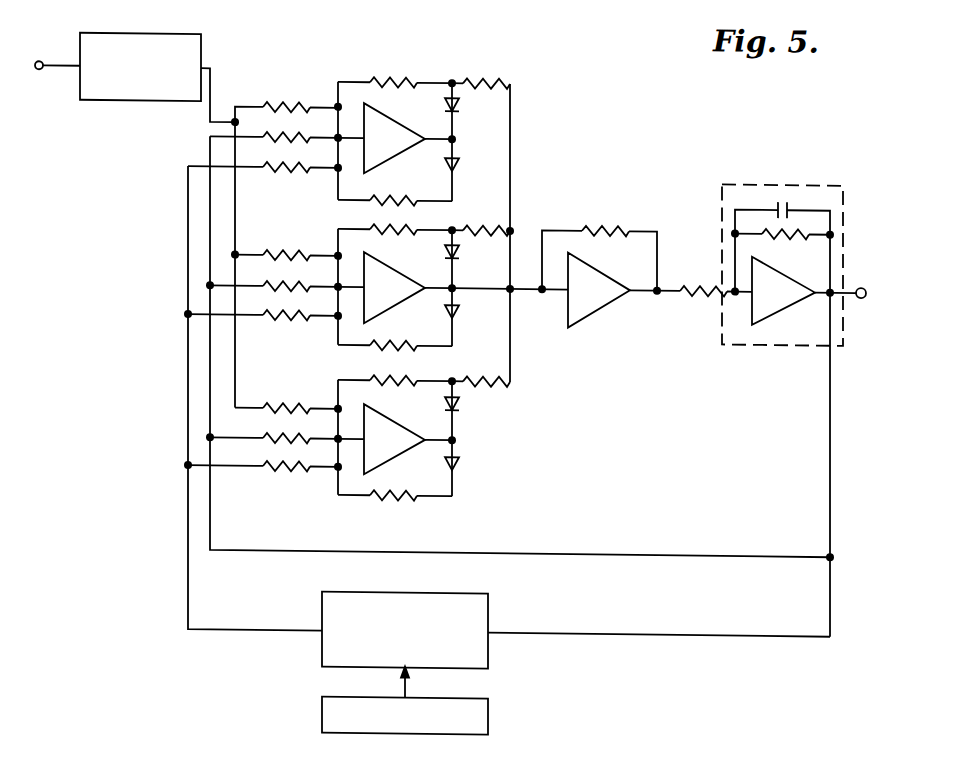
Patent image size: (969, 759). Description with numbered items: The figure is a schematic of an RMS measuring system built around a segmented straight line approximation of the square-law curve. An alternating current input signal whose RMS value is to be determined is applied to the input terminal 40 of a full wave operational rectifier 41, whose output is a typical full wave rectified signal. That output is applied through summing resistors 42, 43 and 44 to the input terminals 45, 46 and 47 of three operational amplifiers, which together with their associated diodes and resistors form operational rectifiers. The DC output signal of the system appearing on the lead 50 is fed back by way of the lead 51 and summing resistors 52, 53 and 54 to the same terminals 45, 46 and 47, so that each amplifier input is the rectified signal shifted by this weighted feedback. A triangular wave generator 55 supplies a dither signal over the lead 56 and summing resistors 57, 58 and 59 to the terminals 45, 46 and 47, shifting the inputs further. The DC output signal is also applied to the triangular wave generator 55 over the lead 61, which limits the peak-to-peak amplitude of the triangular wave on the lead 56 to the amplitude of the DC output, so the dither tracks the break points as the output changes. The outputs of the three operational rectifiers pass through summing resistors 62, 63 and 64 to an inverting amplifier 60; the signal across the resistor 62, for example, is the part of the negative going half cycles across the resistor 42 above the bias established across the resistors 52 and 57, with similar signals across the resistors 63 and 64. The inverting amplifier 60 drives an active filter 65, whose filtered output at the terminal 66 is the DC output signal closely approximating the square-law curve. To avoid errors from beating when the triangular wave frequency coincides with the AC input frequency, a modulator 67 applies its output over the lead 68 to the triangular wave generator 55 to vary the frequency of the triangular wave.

The input terminal 40 is at (50, 54).
The full wave operational rectifier 41 is at (173, 36).
The summing resistor 42 is at (288, 102).
The summing resistor 43 is at (290, 252).
The summing resistor 44 is at (288, 405).
The input terminal 45 is at (337, 104).
The input terminal 46 is at (337, 254).
The input terminal 47 is at (337, 407).
The lead 50 is at (830, 412).
The lead 51 is at (246, 551).
The summing resistor 52 is at (294, 137).
The summing resistor 53 is at (294, 284).
The summing resistor 54 is at (294, 434).
The triangular wave generator 55 is at (450, 592).
The lead 56 is at (221, 631).
The summing resistor 57 is at (274, 175).
The summing resistor 58 is at (274, 322).
The summing resistor 59 is at (266, 474).
The inverting amplifier 60 is at (610, 276).
The lead 61 is at (765, 631).
The summing resistor 62 is at (478, 82).
The summing resistor 63 is at (469, 228).
The summing resistor 64 is at (469, 378).
The active filter 65 is at (830, 168).
The terminal 66 is at (862, 293).
The modulator 67 is at (367, 697).
The lead 68 is at (408, 693).